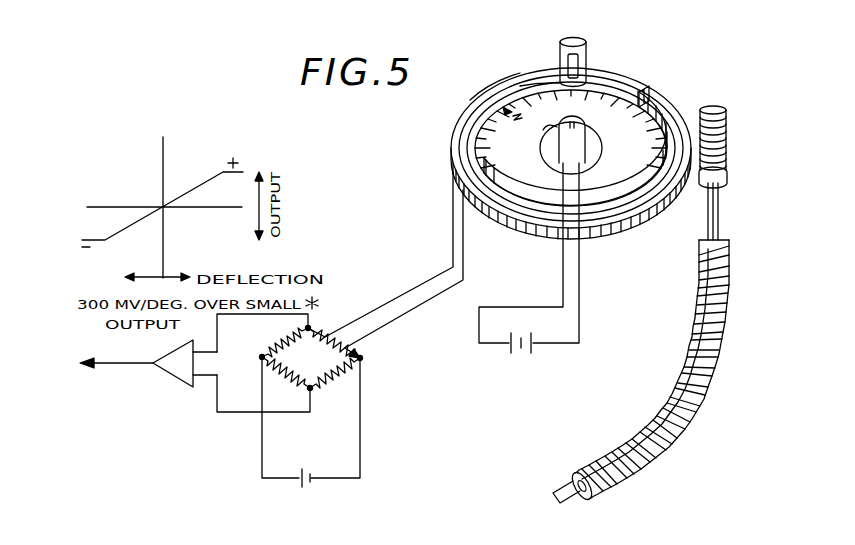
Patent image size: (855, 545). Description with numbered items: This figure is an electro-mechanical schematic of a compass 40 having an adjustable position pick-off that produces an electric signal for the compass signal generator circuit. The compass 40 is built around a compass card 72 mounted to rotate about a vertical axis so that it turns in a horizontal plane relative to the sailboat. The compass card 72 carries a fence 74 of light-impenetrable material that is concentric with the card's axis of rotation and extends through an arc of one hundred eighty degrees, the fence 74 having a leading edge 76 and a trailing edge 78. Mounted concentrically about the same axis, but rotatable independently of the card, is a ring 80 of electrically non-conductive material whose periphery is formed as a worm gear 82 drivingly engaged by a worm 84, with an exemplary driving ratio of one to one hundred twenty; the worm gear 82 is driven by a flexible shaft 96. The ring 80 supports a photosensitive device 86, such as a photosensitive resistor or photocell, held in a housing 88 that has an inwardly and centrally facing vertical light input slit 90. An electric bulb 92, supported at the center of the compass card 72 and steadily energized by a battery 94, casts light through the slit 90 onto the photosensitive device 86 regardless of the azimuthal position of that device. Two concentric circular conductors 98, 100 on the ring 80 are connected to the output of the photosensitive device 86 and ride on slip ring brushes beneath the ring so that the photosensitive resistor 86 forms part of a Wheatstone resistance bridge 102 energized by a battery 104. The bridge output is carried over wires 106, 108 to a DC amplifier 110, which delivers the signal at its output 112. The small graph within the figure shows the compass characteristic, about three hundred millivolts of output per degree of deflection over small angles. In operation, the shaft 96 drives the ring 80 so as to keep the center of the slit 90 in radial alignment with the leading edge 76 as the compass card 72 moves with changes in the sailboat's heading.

The compass 40 is at (576, 201).
The compass card 72 is at (484, 130).
The fence 74 is at (680, 88).
The leading edge 76 is at (650, 90).
The trailing edge 78 is at (508, 200).
The ring 80 is at (686, 104).
The worm gear 82 is at (628, 233).
The worm 84 is at (728, 157).
The photosensitive device 86 is at (601, 47).
The housing 88 is at (570, 38).
The light input slit 90 is at (586, 66).
The electric bulb 92 is at (552, 145).
The battery 94 is at (520, 355).
The flexible shaft 96 is at (724, 296).
The concentric circular conductor 98 is at (507, 80).
The concentric circular conductor 100 is at (541, 79).
The Wheatstone resistance bridge 102 is at (328, 317).
The battery 104 is at (298, 490).
The wire 106 is at (236, 314).
The wire 108 is at (231, 412).
The DC amplifier 110 is at (186, 387).
The output 112 is at (126, 364).